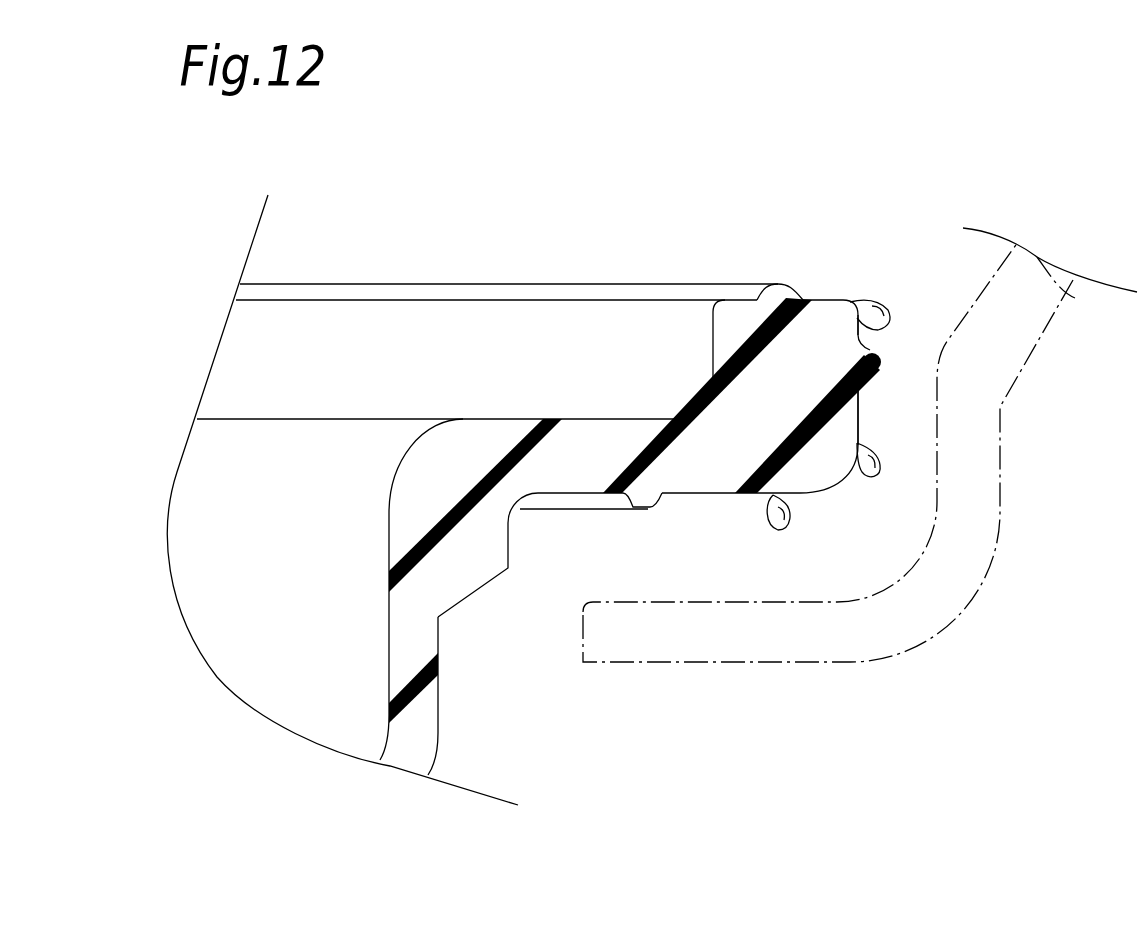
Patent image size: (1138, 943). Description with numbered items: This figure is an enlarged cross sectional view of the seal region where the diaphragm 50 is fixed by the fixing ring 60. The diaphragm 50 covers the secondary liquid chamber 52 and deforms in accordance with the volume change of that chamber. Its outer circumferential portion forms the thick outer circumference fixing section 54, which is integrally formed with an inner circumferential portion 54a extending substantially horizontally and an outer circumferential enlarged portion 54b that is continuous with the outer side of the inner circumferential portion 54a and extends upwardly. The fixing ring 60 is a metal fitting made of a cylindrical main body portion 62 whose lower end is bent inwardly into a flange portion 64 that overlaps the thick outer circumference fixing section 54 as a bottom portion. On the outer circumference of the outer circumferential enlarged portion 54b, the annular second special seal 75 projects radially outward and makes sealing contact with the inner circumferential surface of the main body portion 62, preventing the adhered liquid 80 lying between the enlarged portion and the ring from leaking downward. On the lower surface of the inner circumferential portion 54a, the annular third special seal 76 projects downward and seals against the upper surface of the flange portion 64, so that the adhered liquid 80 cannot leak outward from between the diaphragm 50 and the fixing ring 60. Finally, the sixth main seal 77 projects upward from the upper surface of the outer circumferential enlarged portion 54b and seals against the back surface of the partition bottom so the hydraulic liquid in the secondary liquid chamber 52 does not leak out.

The diaphragm 50 is at (443, 730).
The secondary liquid chamber 52 is at (268, 678).
The thick outer circumference fixing section 54 is at (667, 466).
The inner circumferential portion 54a is at (590, 427).
The outer circumferential enlarged portion 54b is at (848, 423).
The fixing ring 60 is at (860, 490).
The main body portion 62 is at (1077, 298).
The flange portion 64 is at (860, 647).
The second special seal for adhered liquid 75 is at (880, 352).
The third special seal for adhered liquid 76 is at (647, 505).
The sixth main seal 77 is at (785, 284).
The adhered liquid 80 is at (870, 300).